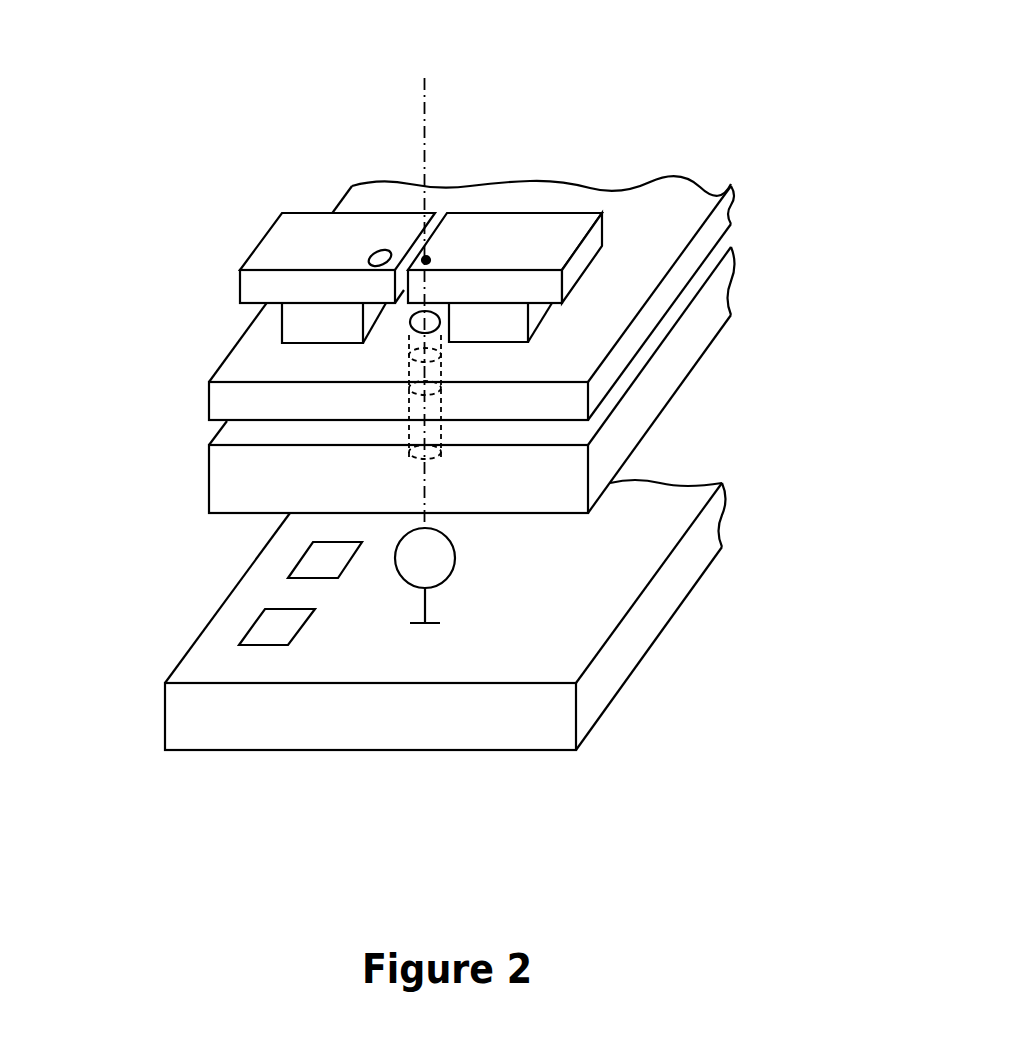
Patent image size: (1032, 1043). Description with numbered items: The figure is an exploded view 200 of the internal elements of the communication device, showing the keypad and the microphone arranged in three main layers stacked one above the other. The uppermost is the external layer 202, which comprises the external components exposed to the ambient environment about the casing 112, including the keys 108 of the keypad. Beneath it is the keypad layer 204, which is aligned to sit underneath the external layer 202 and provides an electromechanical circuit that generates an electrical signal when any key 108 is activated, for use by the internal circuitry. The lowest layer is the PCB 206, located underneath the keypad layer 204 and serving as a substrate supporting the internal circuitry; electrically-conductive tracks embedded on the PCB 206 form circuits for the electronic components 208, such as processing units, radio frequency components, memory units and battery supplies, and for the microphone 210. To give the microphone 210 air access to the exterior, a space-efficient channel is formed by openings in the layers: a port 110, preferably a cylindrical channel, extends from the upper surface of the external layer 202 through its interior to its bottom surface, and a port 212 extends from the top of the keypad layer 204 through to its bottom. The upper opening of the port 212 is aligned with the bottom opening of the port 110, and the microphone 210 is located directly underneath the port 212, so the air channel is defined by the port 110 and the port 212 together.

The exploded view 200 is at (480, 384).
The external layer 202 is at (195, 390).
The keypad layer 204 is at (195, 466).
The PCB 206 is at (177, 608).
The electronic components 208 is at (315, 567).
The microphone 210 is at (455, 557).
The port 212 is at (432, 100).
The key 108 is at (267, 245).
The port 110 is at (442, 345).
The casing 112 is at (680, 184).